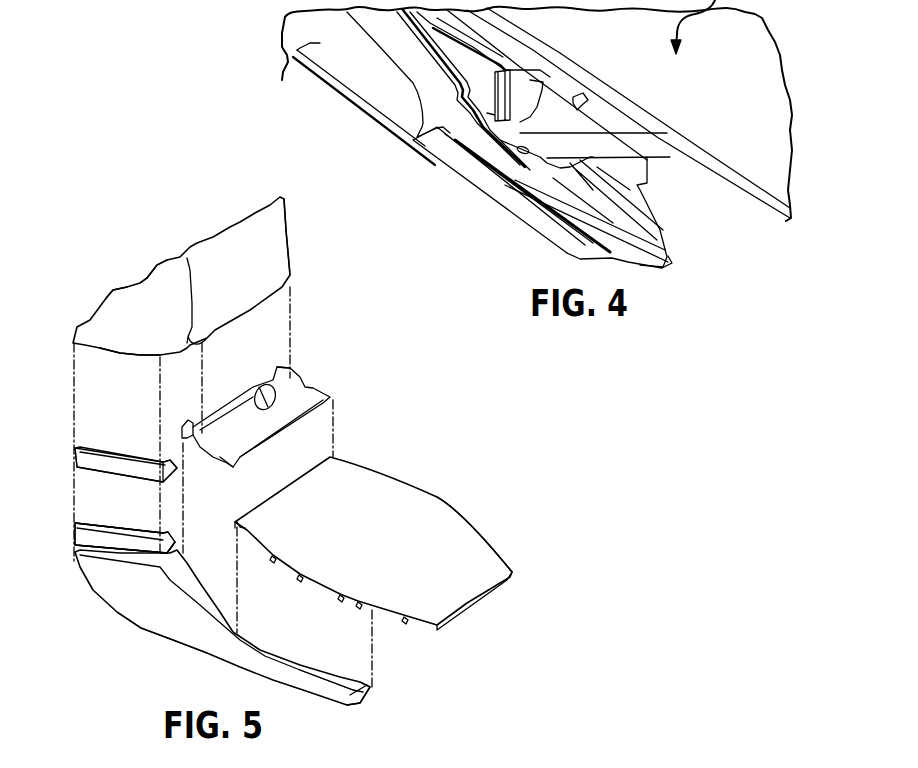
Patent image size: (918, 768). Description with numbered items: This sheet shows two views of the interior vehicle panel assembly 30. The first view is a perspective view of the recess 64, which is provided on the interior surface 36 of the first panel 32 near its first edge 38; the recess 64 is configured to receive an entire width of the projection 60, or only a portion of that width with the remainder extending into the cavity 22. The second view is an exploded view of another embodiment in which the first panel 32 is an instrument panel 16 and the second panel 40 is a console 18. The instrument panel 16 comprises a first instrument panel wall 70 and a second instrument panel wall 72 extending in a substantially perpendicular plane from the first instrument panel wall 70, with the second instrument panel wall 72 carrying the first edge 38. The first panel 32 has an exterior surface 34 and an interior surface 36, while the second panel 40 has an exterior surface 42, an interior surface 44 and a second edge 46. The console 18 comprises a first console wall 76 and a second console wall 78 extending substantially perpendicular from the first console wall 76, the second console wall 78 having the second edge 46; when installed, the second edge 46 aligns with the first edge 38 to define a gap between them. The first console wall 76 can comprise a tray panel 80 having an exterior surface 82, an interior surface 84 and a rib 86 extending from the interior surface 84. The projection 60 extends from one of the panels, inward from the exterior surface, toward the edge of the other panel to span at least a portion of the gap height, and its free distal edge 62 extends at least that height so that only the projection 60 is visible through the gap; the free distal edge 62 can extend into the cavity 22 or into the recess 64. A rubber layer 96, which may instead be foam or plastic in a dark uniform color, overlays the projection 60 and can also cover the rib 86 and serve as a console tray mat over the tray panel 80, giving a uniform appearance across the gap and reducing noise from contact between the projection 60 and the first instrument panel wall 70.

In FIG. 5, the instrument panel 16 is at (203, 250).
In FIG. 5, the lower door trim panel 18 is at (427, 515).
In FIG. 5, the cavity 22 is at (201, 482).
In FIG. 5, the interior vehicle panel assembly 30 is at (406, 365).
In FIG. 4, the first panel 32 is at (300, 48).
In FIG. 5, the first panel 32 is at (157, 287).
In FIG. 5, the exterior surface 34 is at (149, 335).
In FIG. 4, the interior surface 36 is at (365, 66).
In FIG. 4, the first edge 38 is at (443, 165).
In FIG. 5, the first edge 38 is at (135, 357).
In FIG. 5, the second panel 40 is at (370, 684).
In FIG. 5, the exterior surface 42 is at (153, 606).
In FIG. 5, the interior surface 44 is at (307, 670).
In FIG. 5, the second edge 46 is at (108, 557).
In FIG. 5, the projection 60 is at (143, 540).
In FIG. 5, the free distal edge 62 is at (107, 533).
In FIG. 4, the recess 64 is at (503, 190).
In FIG. 5, the first instrument panel wall 70 is at (267, 258).
In FIG. 5, the second instrument panel wall 72 is at (125, 298).
In FIG. 5, the first console wall 76 is at (478, 557).
In FIG. 5, the second console wall 78 is at (188, 635).
In FIG. 5, the tray panel 80 is at (300, 397).
In FIG. 5, the exterior surface 82 is at (252, 441).
In FIG. 5, the interior surface 84 is at (287, 373).
In FIG. 5, the rib 86 is at (188, 420).
In FIG. 5, the rubber layer 96 is at (90, 458).